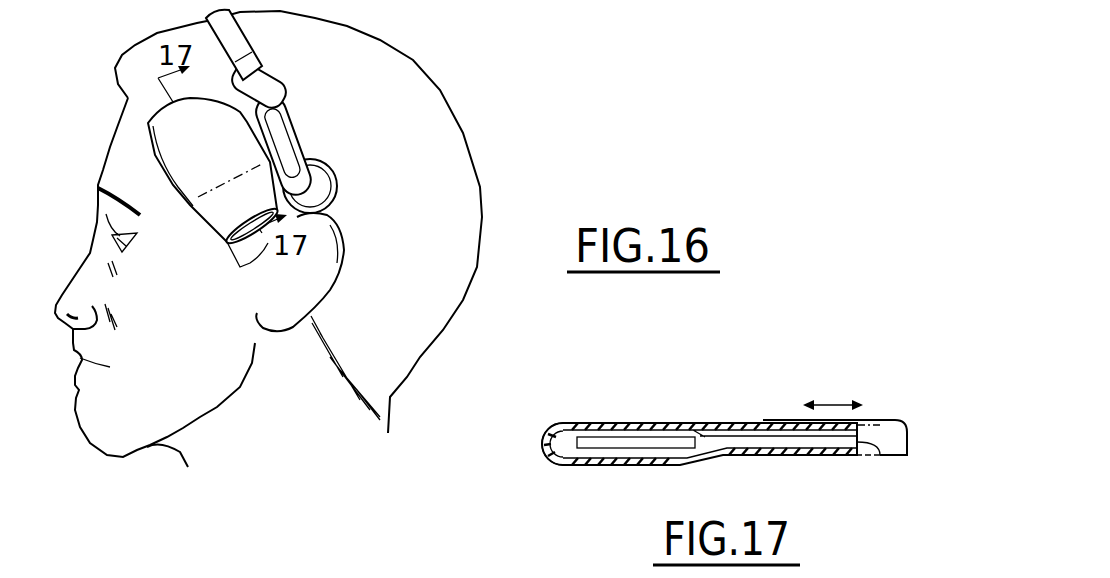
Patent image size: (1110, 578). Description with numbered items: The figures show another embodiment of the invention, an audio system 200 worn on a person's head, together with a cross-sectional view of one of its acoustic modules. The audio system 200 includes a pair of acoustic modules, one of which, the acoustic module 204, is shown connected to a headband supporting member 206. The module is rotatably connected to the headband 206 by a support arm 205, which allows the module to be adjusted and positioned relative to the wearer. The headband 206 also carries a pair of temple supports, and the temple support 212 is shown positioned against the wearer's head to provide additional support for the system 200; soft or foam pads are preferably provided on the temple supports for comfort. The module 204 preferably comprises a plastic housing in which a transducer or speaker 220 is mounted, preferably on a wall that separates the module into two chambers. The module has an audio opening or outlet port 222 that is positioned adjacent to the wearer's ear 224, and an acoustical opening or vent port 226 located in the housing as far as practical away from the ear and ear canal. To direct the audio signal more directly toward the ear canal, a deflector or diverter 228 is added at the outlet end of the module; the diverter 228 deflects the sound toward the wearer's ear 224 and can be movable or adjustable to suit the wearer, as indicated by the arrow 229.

In FIG. 16, the audio system 200 is at (322, 85).
In FIG. 16, the acoustic module 204 is at (237, 141).
In FIG. 17, the acoustic module 204 is at (699, 420).
In FIG. 16, the support arm 205 is at (253, 72).
In FIG. 16, the headband supporting member 206 is at (258, 27).
In FIG. 16, the temple support 212 is at (327, 175).
In FIG. 17, the transducer or speaker 220 is at (668, 445).
In FIG. 16, the audio opening (outlet port) 222 is at (265, 249).
In FIG. 17, the audio opening (outlet port) 222 is at (880, 455).
In FIG. 16, the wearer's ear 224 is at (337, 262).
In FIG. 17, the acoustical opening (vent port) 226 is at (542, 442).
In FIG. 16, the deflector or diverter 228 is at (218, 243).
In FIG. 17, the deflector or diverter 228 is at (875, 420).
In FIG. 17, the arrow 229 is at (833, 402).